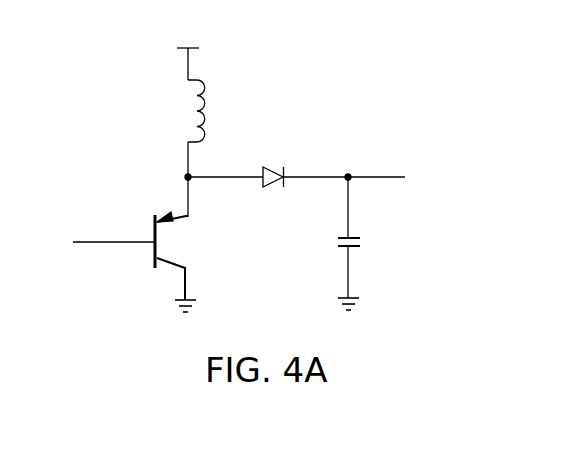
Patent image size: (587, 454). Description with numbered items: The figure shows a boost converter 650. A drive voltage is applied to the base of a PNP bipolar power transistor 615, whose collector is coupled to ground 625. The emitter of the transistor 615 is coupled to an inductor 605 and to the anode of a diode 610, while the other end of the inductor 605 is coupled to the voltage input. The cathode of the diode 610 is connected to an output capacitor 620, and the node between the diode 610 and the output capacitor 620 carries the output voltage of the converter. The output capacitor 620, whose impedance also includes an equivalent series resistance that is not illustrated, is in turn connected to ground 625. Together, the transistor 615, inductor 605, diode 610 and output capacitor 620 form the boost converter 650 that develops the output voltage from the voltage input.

The inductor 605 is at (205, 107).
The diode 610 is at (278, 166).
The PNP bipolar power transistor 615 is at (152, 252).
The output capacitor 620 is at (337, 240).
The ground 625 is at (177, 306).
The boost converter 650 is at (349, 69).